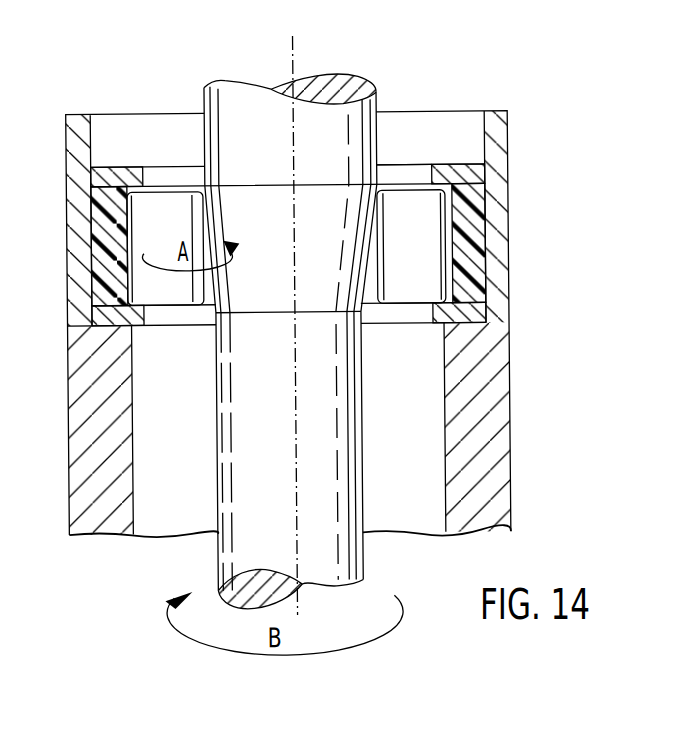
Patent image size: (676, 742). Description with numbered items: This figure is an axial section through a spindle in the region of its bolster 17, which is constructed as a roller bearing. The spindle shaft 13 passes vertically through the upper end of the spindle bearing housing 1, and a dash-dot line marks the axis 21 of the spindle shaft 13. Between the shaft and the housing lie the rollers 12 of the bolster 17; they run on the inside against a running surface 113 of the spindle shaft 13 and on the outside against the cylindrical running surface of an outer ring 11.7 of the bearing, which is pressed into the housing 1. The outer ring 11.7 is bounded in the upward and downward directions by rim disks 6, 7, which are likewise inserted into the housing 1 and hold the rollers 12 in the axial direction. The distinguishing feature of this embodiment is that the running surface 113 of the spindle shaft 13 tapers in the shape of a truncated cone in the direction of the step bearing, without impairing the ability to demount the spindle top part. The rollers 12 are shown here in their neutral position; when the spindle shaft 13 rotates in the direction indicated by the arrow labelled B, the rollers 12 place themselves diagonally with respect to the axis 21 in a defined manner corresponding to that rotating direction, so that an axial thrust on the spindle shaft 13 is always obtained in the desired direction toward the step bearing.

The spindle bearing housing 1 is at (485, 463).
The flanged disk 6 is at (467, 172).
The flanged disk 7 is at (466, 313).
The outer ring of the bearing 11.7 is at (464, 249).
The rollers 12 is at (426, 270).
The spindle shaft 13 is at (360, 132).
The bolster 17 is at (414, 169).
The axis of the spindle shaft 21 is at (297, 60).
The running surface 113 is at (348, 296).